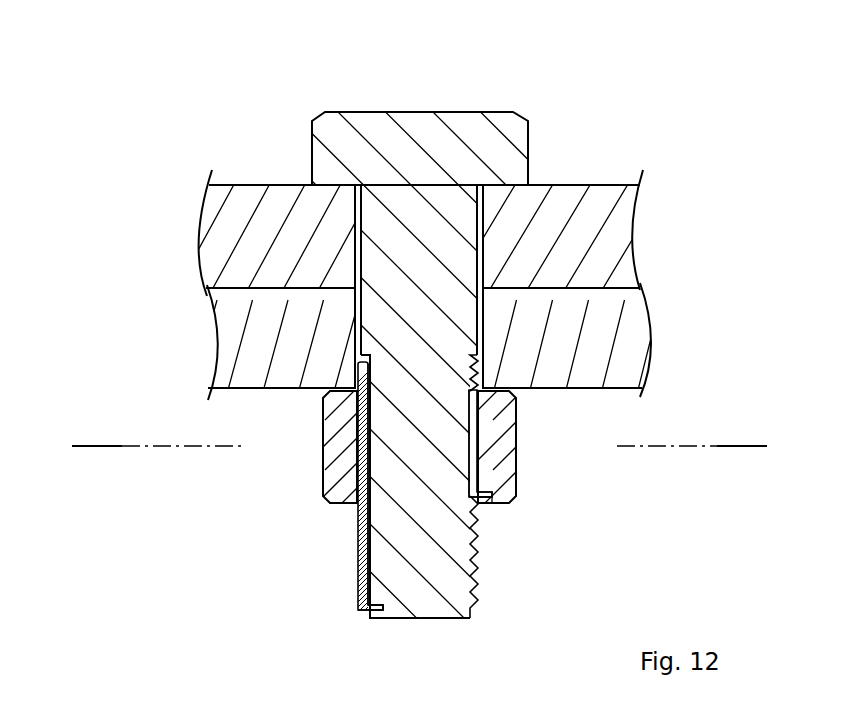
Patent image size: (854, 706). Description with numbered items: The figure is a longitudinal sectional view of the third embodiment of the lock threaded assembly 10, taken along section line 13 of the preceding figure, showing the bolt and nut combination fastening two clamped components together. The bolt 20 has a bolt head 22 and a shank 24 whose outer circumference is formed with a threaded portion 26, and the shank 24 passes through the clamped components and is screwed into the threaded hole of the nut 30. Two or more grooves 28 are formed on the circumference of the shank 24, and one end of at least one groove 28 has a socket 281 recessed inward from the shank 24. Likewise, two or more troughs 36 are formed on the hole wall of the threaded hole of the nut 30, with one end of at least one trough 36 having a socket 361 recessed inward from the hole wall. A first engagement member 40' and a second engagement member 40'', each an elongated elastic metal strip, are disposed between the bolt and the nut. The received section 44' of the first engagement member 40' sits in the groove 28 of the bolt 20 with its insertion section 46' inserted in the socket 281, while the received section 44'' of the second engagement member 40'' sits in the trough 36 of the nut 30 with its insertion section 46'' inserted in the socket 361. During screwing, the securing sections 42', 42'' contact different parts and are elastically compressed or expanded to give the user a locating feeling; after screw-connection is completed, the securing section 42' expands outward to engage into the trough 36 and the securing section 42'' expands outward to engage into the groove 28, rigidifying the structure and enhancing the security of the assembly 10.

The lock threaded assembly 10 is at (630, 85).
The section line 13- 13 is at (97, 398).
The bolt 20 is at (500, 100).
The bolt head 22 is at (333, 147).
The shank 24 is at (460, 240).
The threaded portion 26 is at (478, 560).
The groove 28 is at (358, 360).
The socket 281 is at (385, 608).
The nut 30 is at (320, 455).
The trough 36 is at (360, 426).
The socket 361 is at (487, 500).
The first engagement member 40' is at (294, 533).
The second engagement member 40'' is at (556, 548).
The securing section 42' is at (299, 484).
The securing section 42'' is at (558, 443).
The received section 44' is at (310, 606).
The received section 44'' is at (560, 500).
The insertion section 46' is at (356, 603).
The insertion section 46'' is at (555, 535).